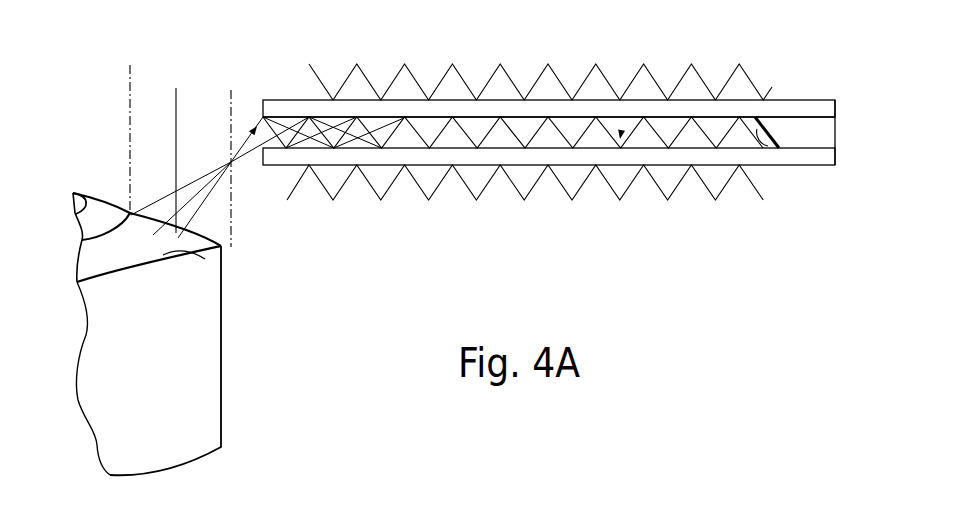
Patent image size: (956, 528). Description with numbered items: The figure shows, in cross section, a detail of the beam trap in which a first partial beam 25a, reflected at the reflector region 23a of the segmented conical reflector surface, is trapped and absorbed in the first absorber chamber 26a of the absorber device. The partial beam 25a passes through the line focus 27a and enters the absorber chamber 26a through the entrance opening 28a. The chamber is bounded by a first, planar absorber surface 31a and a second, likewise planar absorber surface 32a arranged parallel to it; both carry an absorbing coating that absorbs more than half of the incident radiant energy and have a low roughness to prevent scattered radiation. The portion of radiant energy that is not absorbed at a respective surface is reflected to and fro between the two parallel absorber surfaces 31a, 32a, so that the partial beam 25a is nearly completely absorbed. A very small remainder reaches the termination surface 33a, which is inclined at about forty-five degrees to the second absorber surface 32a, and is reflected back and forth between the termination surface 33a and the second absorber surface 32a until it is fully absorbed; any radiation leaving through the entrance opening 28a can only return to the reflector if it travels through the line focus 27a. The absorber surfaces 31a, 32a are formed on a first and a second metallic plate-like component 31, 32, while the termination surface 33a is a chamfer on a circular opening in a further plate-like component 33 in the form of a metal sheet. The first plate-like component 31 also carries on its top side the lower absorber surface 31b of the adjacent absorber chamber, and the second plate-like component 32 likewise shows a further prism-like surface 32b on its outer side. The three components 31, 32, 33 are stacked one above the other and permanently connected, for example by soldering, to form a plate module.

The reflector region 23a is at (222, 250).
The first partial beam 25a is at (167, 212).
The line focus 27a is at (230, 160).
The entrance opening 28a is at (255, 124).
The first plate-like component 31 is at (585, 110).
The first absorber surface 31a is at (530, 118).
The lower absorber surface 31b is at (401, 96).
The first absorber chamber 26a is at (621, 131).
The second plate-like component 32 is at (610, 157).
The second absorber surface 32a is at (488, 140).
The outer prism surface of second light guide plate 32b is at (433, 178).
The further plate-like component 33 is at (820, 130).
The termination surface 33a is at (750, 117).